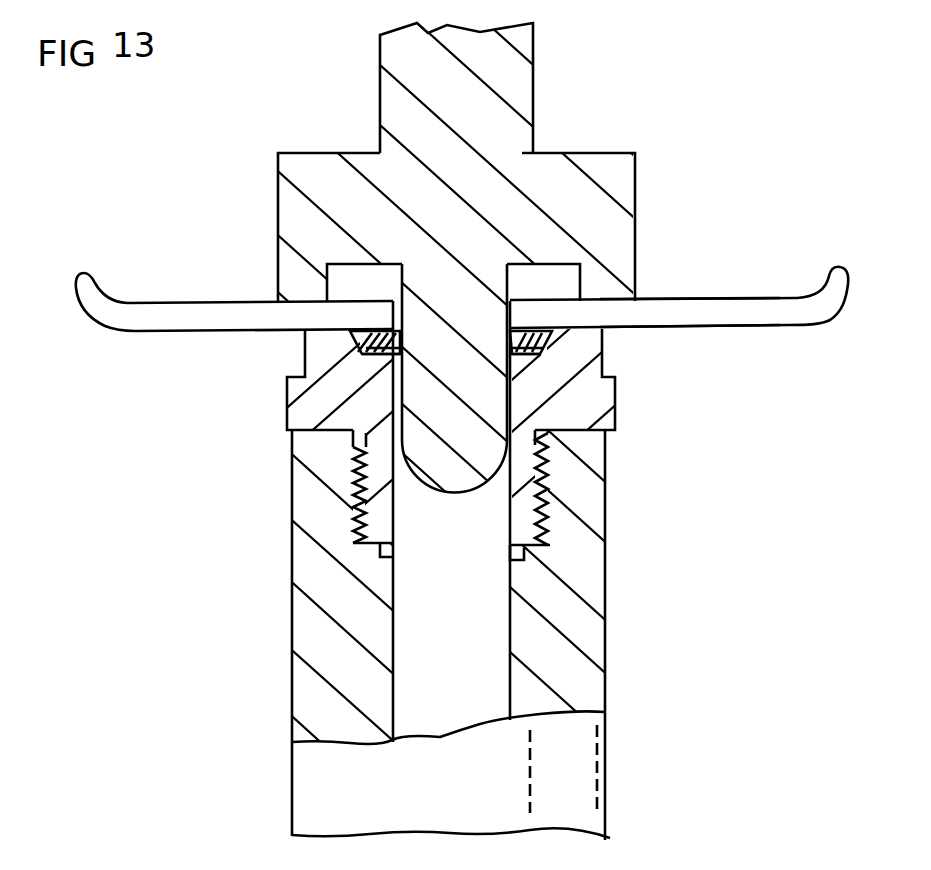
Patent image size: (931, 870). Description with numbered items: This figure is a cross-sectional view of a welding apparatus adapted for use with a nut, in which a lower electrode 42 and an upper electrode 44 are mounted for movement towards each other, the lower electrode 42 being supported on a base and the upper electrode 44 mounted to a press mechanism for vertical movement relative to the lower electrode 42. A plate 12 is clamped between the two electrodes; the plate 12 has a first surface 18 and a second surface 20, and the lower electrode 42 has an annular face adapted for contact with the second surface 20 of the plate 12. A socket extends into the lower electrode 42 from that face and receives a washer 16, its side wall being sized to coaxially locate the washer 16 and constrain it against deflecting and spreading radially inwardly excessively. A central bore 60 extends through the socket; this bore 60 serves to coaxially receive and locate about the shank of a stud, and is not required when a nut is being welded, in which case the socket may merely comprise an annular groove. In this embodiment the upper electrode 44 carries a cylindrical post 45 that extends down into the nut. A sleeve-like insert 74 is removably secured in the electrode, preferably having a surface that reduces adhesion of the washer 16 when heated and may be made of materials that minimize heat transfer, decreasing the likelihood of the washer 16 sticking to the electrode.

The plate 12 is at (758, 262).
The washer 16 is at (362, 335).
The first surface 18 is at (664, 296).
The second surface 20 is at (658, 329).
The lower electrode 42 is at (234, 529).
The upper electrode 44 is at (290, 192).
The cylindrical post 45 is at (466, 364).
The central bore 60 is at (471, 589).
The sleeve-like insert 74 is at (372, 349).